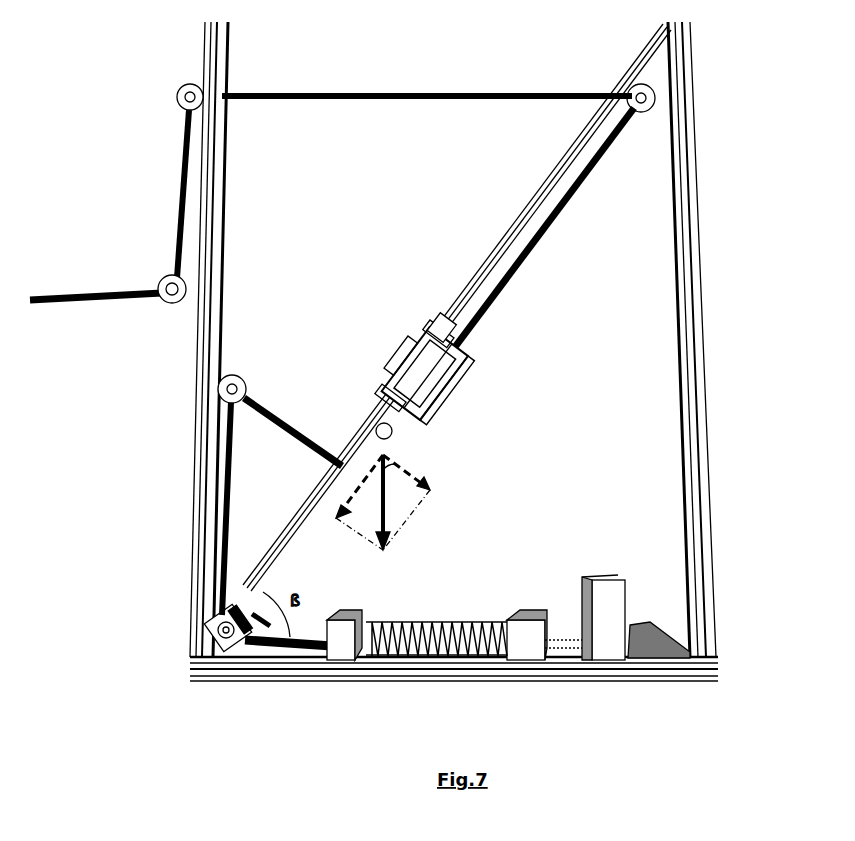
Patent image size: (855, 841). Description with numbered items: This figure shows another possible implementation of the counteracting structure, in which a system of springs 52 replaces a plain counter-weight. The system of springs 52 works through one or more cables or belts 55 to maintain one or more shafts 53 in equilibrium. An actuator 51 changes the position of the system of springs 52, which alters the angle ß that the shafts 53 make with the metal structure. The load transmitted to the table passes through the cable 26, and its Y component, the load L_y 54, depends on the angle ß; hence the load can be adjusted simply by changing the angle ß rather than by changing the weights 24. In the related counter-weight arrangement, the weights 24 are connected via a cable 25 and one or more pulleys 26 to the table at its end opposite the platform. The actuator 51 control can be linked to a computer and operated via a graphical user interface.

The weights 24 is at (394, 378).
The cable 25 is at (410, 88).
The pulley 26 is at (163, 300).
The actuator 51 is at (588, 577).
The system of springs 52 is at (437, 612).
The shaft 53 is at (484, 262).
The load L_y 54 is at (415, 512).
The cable or belt 55 is at (286, 410).